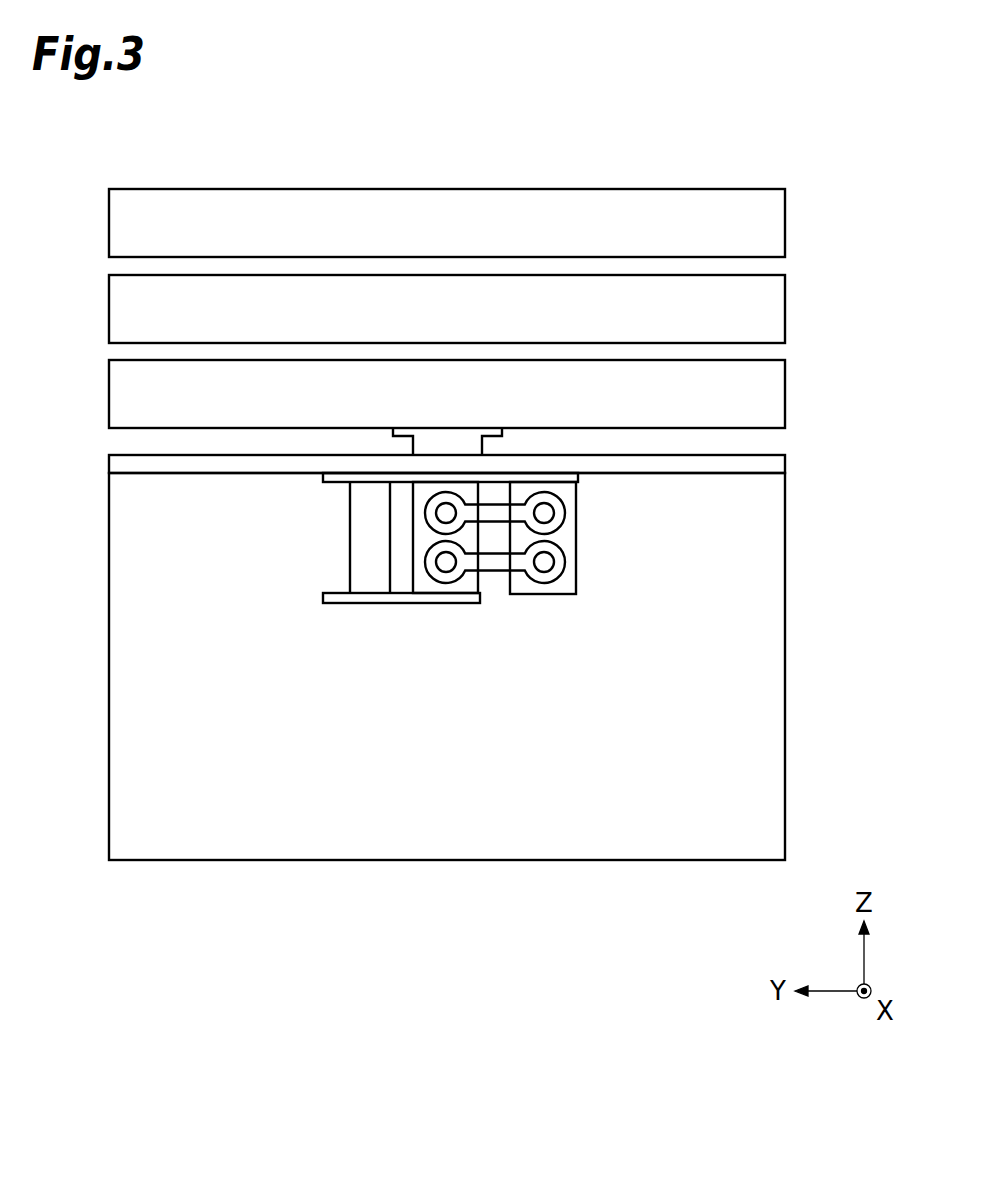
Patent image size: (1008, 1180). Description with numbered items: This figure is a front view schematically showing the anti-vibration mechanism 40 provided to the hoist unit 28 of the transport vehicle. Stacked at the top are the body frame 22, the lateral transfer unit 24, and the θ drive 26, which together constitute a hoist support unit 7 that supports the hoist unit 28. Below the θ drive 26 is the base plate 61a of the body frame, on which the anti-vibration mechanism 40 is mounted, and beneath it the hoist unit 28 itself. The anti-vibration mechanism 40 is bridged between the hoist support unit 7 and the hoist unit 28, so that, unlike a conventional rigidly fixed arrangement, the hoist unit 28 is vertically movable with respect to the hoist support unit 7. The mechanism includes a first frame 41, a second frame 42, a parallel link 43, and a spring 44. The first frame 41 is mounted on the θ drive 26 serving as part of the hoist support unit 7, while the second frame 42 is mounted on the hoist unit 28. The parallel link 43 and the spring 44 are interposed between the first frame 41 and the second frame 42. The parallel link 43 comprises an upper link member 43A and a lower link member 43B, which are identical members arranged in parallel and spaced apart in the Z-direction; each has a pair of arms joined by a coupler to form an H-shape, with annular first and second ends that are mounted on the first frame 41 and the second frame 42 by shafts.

The hoist support unit 7 is at (499, 308).
The body frame 22 is at (768, 221).
The lateral transfer unit 24 is at (768, 305).
The θ drive 26 is at (482, 394).
The base plate 61a is at (768, 463).
The hoist unit 28 is at (788, 555).
The anti-vibration mechanism 40 is at (460, 603).
The first frame 41 is at (453, 610).
The second frame 42 is at (558, 556).
The parallel link 43 is at (564, 537).
The upper link member 43A is at (556, 513).
The lower link member 43B is at (556, 562).
The spring 44 is at (340, 544).